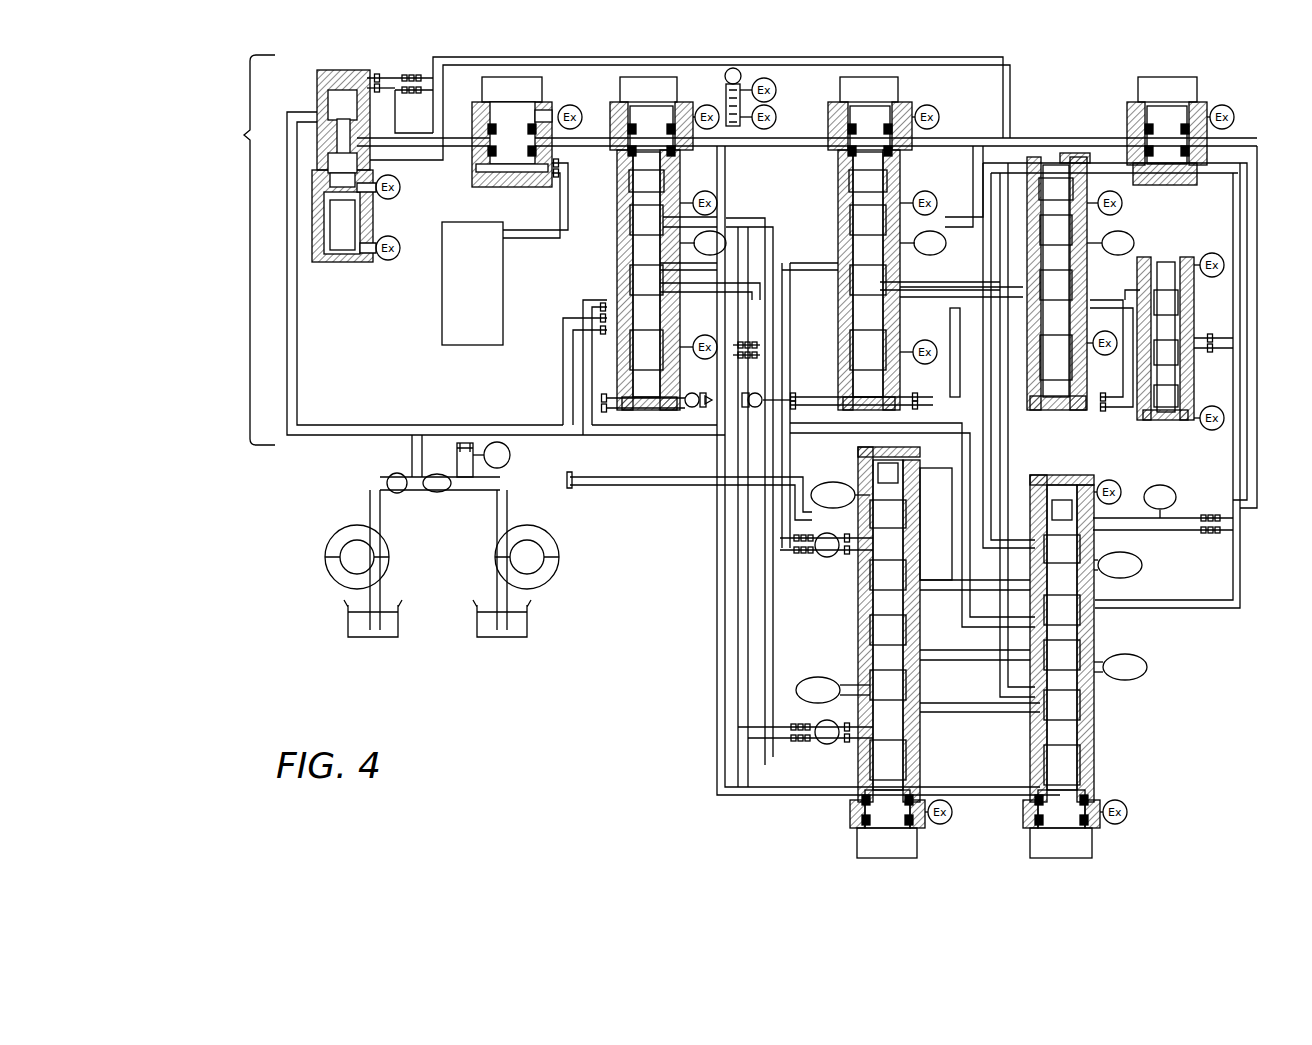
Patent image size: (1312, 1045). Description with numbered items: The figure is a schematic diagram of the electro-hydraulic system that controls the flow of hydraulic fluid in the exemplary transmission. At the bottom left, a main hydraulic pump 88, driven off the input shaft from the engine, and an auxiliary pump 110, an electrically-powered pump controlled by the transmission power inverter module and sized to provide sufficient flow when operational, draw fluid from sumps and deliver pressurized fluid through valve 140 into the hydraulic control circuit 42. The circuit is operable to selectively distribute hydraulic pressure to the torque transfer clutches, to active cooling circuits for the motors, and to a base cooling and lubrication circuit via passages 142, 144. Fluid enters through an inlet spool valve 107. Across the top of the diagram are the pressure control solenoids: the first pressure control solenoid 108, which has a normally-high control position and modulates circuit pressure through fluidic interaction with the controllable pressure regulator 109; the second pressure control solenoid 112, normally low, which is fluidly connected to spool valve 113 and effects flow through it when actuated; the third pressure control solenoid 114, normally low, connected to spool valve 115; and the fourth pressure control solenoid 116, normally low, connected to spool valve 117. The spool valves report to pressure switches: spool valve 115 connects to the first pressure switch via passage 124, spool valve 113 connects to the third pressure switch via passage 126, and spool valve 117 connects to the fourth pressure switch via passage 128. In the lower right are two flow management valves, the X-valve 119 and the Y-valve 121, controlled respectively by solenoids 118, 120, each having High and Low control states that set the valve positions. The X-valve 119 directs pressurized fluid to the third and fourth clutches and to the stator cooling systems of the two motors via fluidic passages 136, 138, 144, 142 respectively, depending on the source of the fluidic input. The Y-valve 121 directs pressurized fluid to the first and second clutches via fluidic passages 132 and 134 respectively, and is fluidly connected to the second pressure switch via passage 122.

The hydraulic control circuit 42 is at (246, 135).
The main hydraulic pump 88 is at (552, 580).
The inlet spool valve 107 is at (345, 240).
The pressure control solenoid PCS1 108 is at (492, 78).
The controllable pressure regulator 109 is at (510, 272).
The auxiliary pump 110 is at (332, 582).
The pressure control solenoid PCS2 112 is at (1145, 78).
The spool valve 113 is at (1060, 275).
The pressure control solenoid PCS3 114 is at (848, 78).
The spool valve 115 is at (845, 190).
The pressure control solenoid PCS4 116 is at (628, 78).
The spool valve 117 is at (650, 218).
The solenoid 118 is at (862, 850).
The X-valve 119 is at (870, 618).
The solenoid 120 is at (1035, 850).
The Y-valve 121 is at (1078, 718).
The passage 122 is at (1168, 490).
The passage 124 is at (942, 235).
The passage 126 is at (1132, 235).
The passage 128 is at (722, 240).
The fluidic passage 132 is at (1147, 667).
The fluidic passage 134 is at (1142, 563).
The fluidic passage 136 is at (812, 677).
The fluidic passage 138 is at (826, 482).
The valve 140 is at (385, 478).
The passage 142 is at (825, 745).
The passage 144 is at (822, 557).